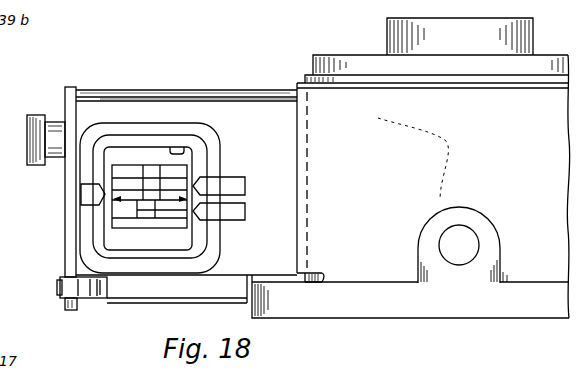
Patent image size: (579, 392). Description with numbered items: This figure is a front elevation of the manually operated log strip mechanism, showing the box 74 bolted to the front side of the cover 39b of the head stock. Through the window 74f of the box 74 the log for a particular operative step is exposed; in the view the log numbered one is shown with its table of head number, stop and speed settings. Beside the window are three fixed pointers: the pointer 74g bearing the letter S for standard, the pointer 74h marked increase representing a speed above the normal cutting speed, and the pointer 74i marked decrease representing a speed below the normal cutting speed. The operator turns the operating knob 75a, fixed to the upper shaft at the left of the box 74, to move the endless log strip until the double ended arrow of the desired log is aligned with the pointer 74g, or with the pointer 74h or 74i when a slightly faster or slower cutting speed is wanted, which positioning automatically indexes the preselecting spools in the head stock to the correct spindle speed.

The box 74 is at (143, 95).
The window 74f is at (183, 149).
The fixed pointer 74g is at (81, 195).
The fixed pointer 74h is at (247, 183).
The fixed pointer 74i is at (246, 212).
The operating knob 75a is at (38, 116).
The cover 39b is at (482, 319).